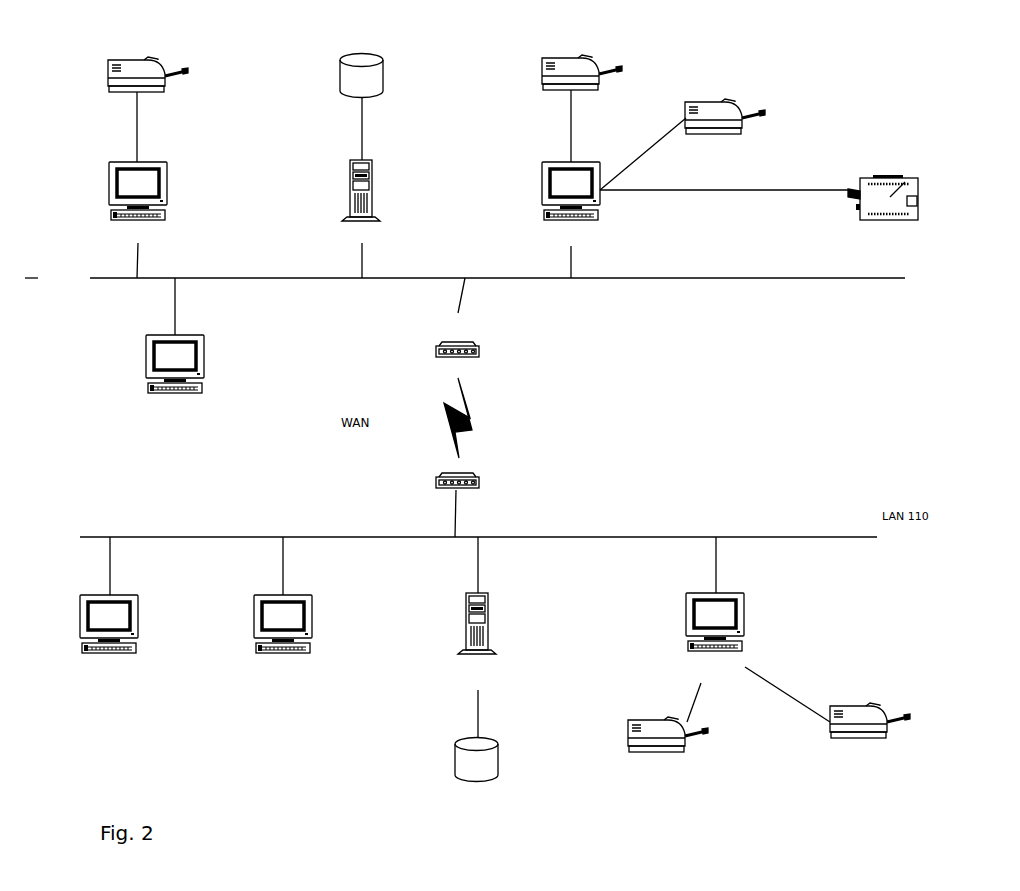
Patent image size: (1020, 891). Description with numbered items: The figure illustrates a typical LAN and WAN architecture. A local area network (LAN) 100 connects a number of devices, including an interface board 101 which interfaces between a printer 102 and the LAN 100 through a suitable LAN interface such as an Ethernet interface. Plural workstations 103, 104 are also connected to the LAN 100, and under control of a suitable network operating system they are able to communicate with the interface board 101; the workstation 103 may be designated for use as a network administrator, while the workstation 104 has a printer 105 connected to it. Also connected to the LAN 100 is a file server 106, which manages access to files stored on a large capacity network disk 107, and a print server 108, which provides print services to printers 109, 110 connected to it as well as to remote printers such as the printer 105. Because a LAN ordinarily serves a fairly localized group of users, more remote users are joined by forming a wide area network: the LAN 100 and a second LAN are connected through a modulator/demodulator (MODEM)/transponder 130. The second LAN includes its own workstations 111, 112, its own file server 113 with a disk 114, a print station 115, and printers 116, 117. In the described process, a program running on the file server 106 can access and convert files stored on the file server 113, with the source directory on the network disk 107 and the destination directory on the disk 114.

The local area network (LAN) 100 is at (465, 288).
The interface board 101 is at (917, 178).
The printer 102 is at (862, 181).
The workstation 103 is at (175, 374).
The workstation 104 is at (109, 190).
The printer 105 is at (117, 74).
The file server 106 is at (350, 190).
The network disk 107 is at (362, 55).
The print server 108 is at (548, 201).
The printer 109 is at (582, 62).
The printer 110 is at (725, 102).
The workstation 111 is at (109, 635).
The workstation 112 is at (283, 635).
The file server 113 is at (478, 641).
The disk 114 is at (476, 771).
The print station (P Station) 115 is at (715, 643).
The printer 116 is at (668, 749).
The printer 117 is at (870, 739).
The modulator/demodulator (MODEM)/transponder 130 is at (479, 352).